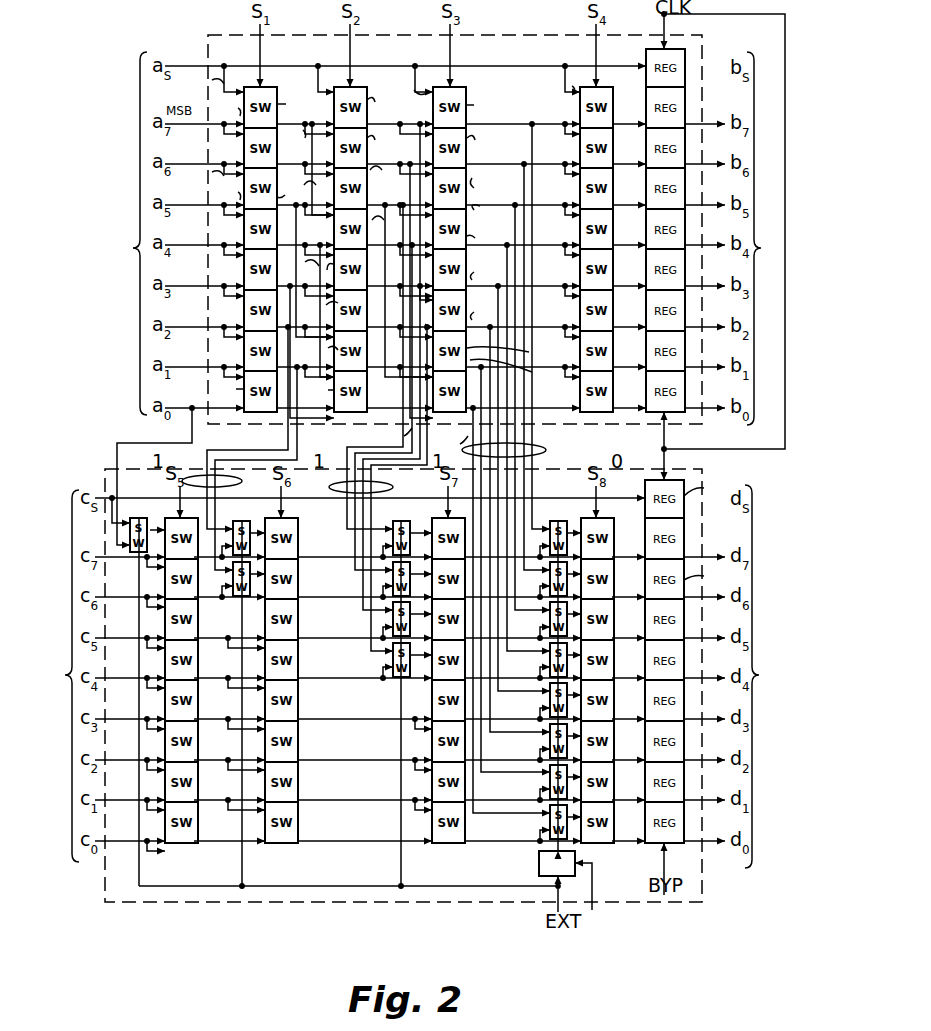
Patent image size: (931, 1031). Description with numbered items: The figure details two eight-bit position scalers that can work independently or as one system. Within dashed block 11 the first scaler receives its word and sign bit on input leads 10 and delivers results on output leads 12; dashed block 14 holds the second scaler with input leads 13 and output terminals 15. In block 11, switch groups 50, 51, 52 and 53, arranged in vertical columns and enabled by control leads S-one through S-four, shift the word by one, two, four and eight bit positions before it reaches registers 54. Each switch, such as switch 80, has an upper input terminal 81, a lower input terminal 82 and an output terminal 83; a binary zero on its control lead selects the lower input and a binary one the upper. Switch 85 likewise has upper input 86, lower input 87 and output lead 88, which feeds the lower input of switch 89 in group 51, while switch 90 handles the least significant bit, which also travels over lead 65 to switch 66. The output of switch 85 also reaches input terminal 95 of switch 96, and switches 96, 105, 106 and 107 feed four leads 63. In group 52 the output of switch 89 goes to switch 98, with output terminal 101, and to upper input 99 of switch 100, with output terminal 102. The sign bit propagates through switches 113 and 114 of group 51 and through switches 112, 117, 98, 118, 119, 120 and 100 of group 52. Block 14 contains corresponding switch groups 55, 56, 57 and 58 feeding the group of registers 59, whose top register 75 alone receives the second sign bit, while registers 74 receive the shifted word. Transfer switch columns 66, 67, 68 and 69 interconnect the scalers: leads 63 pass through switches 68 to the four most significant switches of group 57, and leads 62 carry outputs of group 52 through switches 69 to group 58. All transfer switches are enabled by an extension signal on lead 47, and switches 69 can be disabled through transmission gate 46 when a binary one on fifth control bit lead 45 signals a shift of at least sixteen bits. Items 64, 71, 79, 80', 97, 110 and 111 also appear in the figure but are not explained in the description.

The input leads 10 is at (123, 233).
The eight-bit position scaler 11 is at (546, 14).
The output leads 12 is at (766, 238).
The input leads 13 is at (56, 676).
The second eight-bit position scaler 14 is at (432, 908).
The output terminals 15 is at (765, 676).
The fifth control bit lead 45 is at (592, 888).
The transmission gate 46 is at (539, 863).
The extension input lead 47 is at (548, 908).
The group of switches 50 is at (256, 86).
The group of switches 51 is at (344, 86).
The group of switches 52 is at (447, 86).
The group of switches 53 is at (608, 92).
The registers 54 is at (656, 50).
The group of switches 55 is at (172, 520).
The group of switches 56 is at (298, 518).
The group of switches 57 is at (437, 520).
The group of switches 58 is at (589, 512).
The group of registers 59 is at (644, 490).
The leads 62 is at (546, 450).
The four leads 63 is at (340, 490).
The line bundle 64 is at (242, 482).
The lead 65 is at (192, 432).
The switch 66 is at (144, 510).
The group of switches 67 is at (244, 520).
The group of switches 68 is at (396, 520).
The group of transfer switches 69 is at (560, 520).
The bus line 71 is at (330, 874).
The registers 74 is at (706, 579).
The top register 75 is at (706, 487).
The clock line 79 is at (785, 14).
The individual switch 80 is at (294, 103).
The connection line 80' is at (459, 446).
The upper input terminal 81 is at (207, 79).
The lower input terminal 82 is at (230, 106).
The output terminal 83 is at (295, 133).
The individual switch 85 is at (290, 185).
The upper input terminal 86 is at (207, 171).
The lower input terminal 87 is at (230, 189).
The output terminal lead 88 is at (313, 193).
The individual switch 89 is at (380, 179).
The individual switch 90 is at (229, 389).
The input terminal 95 is at (222, 530).
The individual switch 96 is at (324, 265).
The connection line 97 is at (382, 225).
The individual switch 98 is at (482, 176).
The upper input 99 is at (419, 437).
The individual switch 100 is at (516, 351).
The output terminal 101 is at (145, 512).
The output terminal 102 is at (518, 374).
The individual switch 105 is at (319, 303).
The individual switch 106 is at (320, 345).
The individual switch 107 is at (320, 389).
The connection line 110 is at (412, 85).
The connection line 111 is at (563, 82).
The switch 112 is at (489, 105).
The switch 113 is at (620, 102).
The switch 114 is at (386, 148).
The switch 117 is at (486, 148).
The switch 118 is at (489, 237).
The switch 119 is at (488, 266).
The switch 120 is at (488, 306).